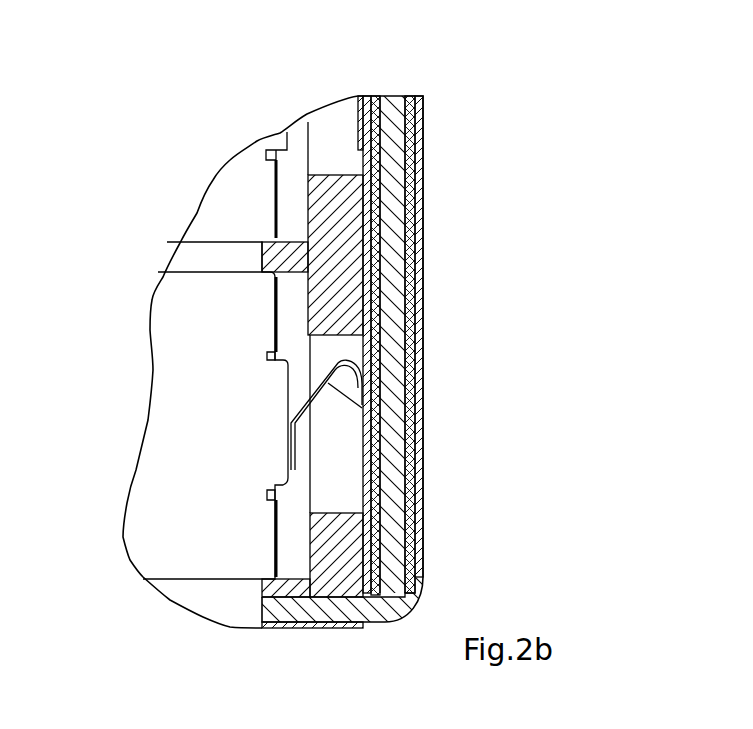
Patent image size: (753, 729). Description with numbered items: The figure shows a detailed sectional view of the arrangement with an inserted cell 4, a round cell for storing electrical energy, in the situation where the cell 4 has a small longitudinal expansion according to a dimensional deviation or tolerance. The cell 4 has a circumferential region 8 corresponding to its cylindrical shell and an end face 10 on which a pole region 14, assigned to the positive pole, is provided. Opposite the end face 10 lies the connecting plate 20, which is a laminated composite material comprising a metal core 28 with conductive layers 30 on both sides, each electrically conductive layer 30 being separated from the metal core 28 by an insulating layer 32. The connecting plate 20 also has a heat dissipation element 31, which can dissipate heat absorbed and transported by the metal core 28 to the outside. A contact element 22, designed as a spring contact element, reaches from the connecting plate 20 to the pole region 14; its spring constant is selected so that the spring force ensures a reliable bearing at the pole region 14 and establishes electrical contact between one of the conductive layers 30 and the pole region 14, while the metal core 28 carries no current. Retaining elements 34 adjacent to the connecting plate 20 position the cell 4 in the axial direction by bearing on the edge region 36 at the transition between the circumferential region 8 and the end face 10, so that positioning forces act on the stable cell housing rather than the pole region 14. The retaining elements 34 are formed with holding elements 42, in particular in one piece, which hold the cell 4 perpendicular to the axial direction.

The cell 4 is at (155, 498).
The circumferential region 8 is at (203, 258).
The end face 10 is at (311, 356).
The pole region 14 is at (247, 431).
The connecting plate 20 is at (408, 71).
The contact element 22 is at (364, 403).
The metal core 28 is at (393, 183).
The conductive layer 30 is at (372, 149).
The heat dissipation element 31 is at (310, 610).
The insulating layer 32 is at (364, 147).
The retaining element 34 is at (342, 255).
The edge region 36 is at (247, 318).
The holding element 42 is at (270, 240).